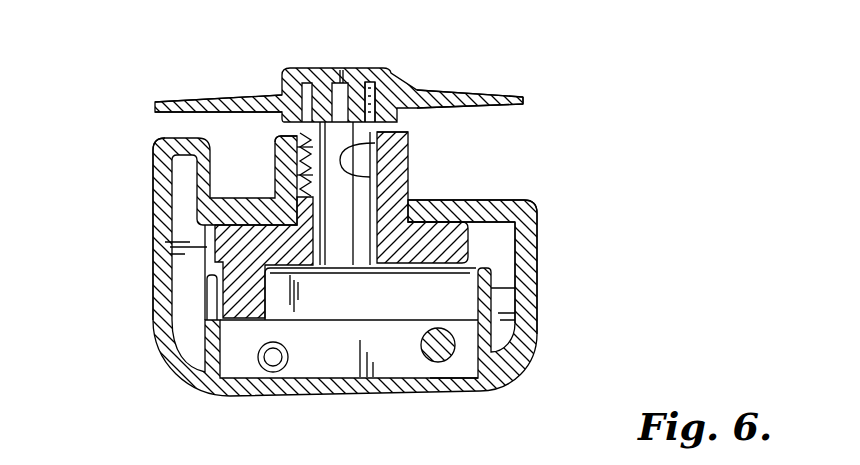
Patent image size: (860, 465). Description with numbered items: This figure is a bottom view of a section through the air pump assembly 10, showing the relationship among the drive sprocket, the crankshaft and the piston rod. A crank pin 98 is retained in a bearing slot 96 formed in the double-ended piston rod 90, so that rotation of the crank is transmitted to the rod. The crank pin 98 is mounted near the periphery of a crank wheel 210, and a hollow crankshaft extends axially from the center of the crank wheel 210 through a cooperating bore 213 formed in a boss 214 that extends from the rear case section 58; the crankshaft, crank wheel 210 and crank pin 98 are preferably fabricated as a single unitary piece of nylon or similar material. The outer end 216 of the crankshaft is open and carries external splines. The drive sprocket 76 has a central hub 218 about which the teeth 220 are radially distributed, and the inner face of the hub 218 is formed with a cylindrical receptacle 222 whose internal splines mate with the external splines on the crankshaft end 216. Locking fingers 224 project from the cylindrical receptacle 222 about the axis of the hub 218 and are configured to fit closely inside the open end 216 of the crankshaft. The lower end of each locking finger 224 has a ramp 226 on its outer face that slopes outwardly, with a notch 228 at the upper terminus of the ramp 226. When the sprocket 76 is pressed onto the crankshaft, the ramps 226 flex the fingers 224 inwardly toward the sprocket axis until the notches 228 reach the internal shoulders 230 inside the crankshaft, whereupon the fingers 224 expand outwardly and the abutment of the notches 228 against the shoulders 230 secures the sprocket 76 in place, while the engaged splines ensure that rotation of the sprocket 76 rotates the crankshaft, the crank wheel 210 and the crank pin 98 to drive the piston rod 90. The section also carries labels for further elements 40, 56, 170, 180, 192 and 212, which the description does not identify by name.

The air pump assembly 10 is at (118, 318).
The housing side wall 40 is at (154, 281).
The lower housing 56 is at (522, 368).
The rear case section 58 is at (530, 207).
The drive sprocket 76 is at (522, 99).
The double-ended piston rod 90 is at (537, 296).
The bearing slot 96 is at (492, 270).
The crank pin 98 is at (265, 292).
The pin 170 is at (258, 370).
The cross pin 180 is at (425, 362).
The bottom wall 192 is at (467, 386).
The crank wheel 210 is at (535, 212).
The spring 212 is at (300, 172).
The bore 213 is at (300, 192).
The boss 214 is at (295, 160).
The outer end of crankshaft 216 is at (378, 105).
The central hub 218 is at (290, 70).
The teeth 220 is at (158, 99).
The cylindrical receptacle 222 is at (395, 93).
The locking fingers 224 is at (333, 120).
The ramp 226 is at (410, 141).
The notch 228 is at (365, 165).
The internal shoulders 230 is at (300, 160).